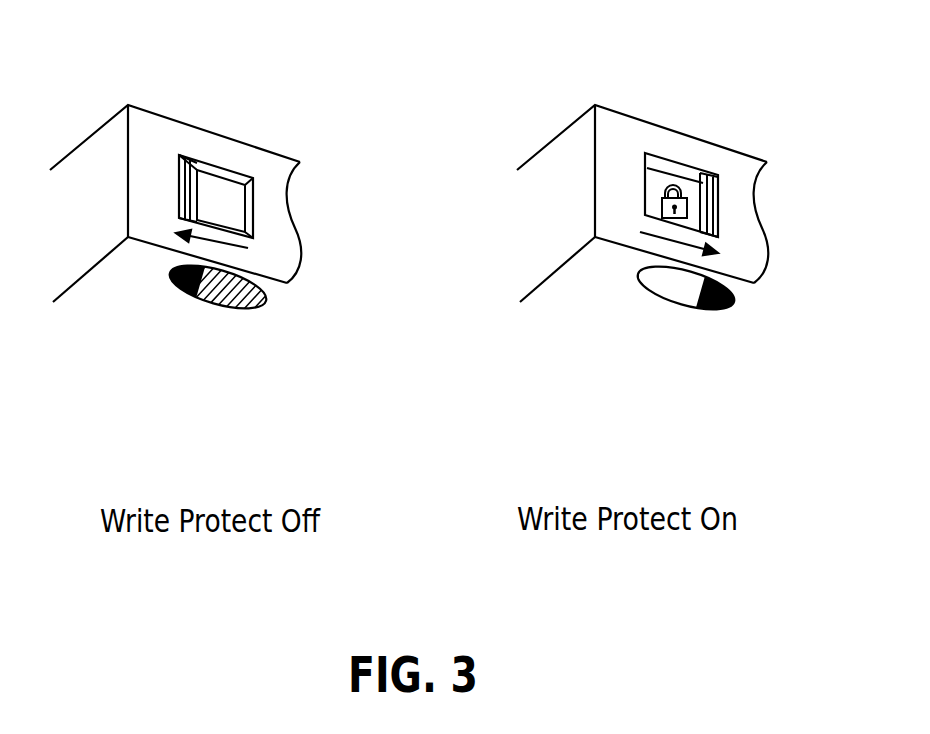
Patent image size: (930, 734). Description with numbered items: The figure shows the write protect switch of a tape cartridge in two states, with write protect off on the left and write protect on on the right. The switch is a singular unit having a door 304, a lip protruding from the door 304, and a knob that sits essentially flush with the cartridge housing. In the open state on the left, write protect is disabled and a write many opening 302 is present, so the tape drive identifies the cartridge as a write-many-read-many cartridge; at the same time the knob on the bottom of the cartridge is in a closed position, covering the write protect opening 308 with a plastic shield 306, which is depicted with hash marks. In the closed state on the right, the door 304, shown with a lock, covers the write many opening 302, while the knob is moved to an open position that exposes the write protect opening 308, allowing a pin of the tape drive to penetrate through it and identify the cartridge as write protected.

The write many opening 302 is at (236, 212).
The door 304 is at (660, 173).
The plastic shield 306 is at (230, 297).
The write protect opening 308 is at (680, 290).